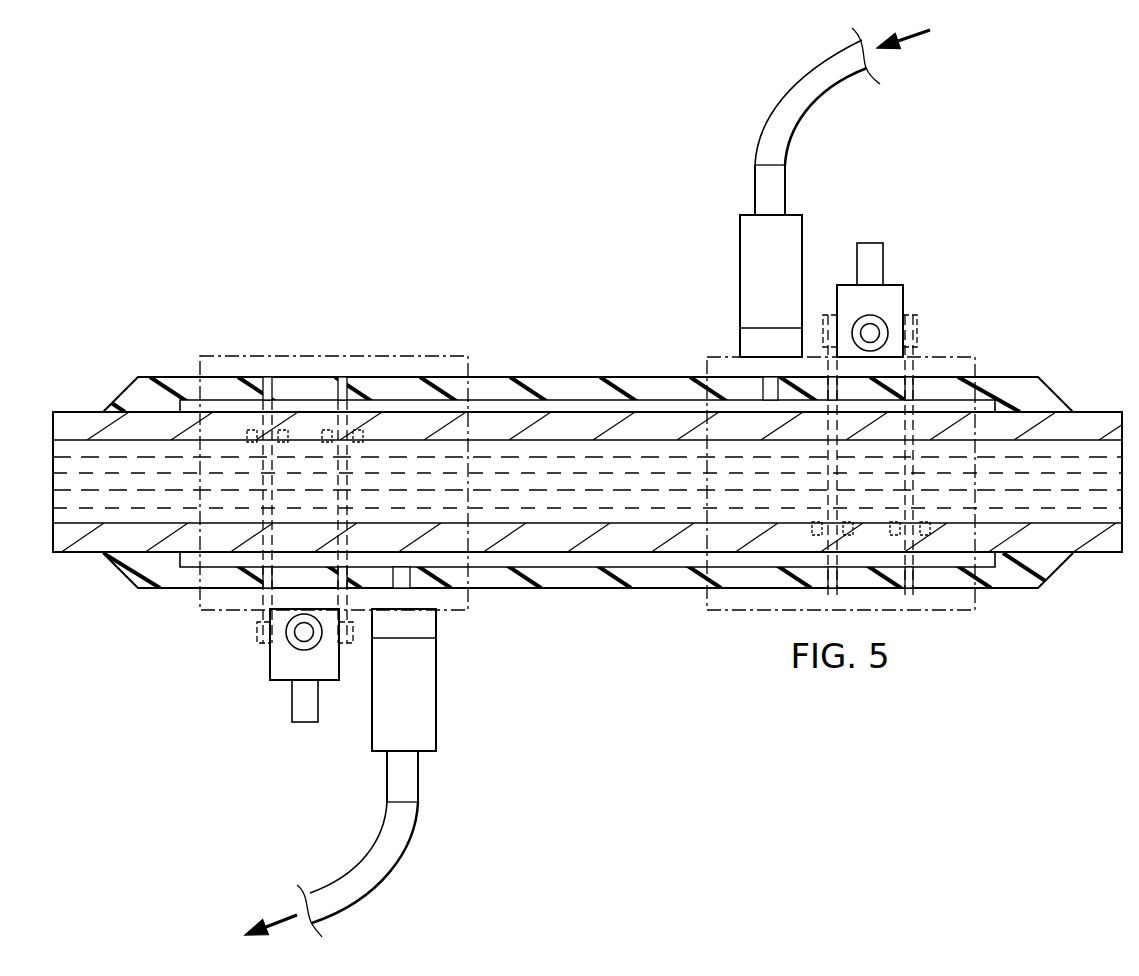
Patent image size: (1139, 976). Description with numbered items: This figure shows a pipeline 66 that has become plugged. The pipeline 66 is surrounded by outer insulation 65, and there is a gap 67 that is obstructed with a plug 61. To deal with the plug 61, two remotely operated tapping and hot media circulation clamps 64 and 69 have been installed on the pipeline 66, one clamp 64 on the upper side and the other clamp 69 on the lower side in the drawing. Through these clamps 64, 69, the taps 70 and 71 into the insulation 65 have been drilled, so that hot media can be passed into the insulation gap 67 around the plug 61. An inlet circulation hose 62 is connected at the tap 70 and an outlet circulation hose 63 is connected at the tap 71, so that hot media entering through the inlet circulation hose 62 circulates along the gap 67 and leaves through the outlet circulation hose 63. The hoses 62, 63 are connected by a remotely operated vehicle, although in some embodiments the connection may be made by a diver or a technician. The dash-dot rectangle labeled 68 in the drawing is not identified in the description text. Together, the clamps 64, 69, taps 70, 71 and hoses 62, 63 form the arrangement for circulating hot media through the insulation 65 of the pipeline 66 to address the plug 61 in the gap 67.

The plug 61 is at (572, 493).
The inlet circulation hose 62 is at (818, 77).
The outlet circulation hose 63 is at (357, 887).
The remotely operated tapping and hot media circulation clamp 64 is at (897, 298).
The outer insulation 65 is at (1008, 387).
The pipeline 66 is at (75, 422).
The gap 67 is at (585, 405).
The left clamp 68 is at (300, 355).
The remotely operated tapping and hot media circulation clamp 69 is at (280, 667).
The tap 70 is at (768, 385).
The tap 71 is at (410, 585).